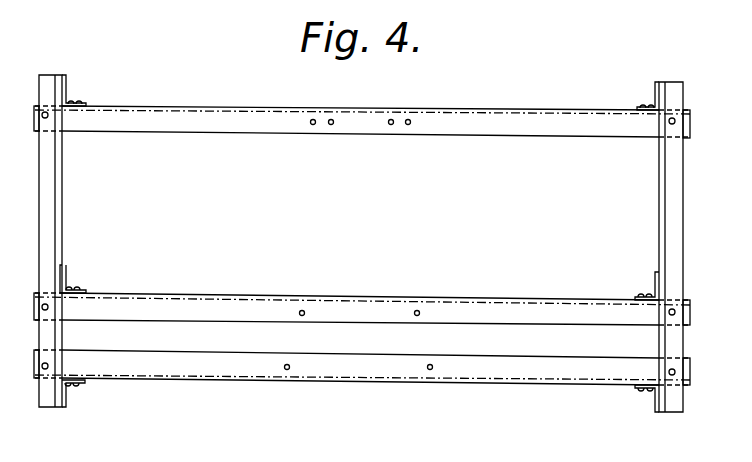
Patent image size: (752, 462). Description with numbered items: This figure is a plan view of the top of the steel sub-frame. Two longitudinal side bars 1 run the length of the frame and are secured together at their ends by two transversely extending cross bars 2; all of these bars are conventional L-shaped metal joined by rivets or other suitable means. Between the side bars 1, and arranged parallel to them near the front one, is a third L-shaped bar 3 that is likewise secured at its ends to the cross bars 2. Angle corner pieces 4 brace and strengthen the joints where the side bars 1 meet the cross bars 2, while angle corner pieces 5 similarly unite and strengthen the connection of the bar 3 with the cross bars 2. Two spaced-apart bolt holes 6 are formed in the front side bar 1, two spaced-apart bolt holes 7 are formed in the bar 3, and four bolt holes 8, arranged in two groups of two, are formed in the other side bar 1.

The longitudinal side bar 1 is at (497, 125).
The cross bar 2 is at (47, 232).
The third L-shaped bar 3 is at (513, 310).
The angle corner piece 4 is at (67, 94).
The angle corner piece 5 is at (63, 281).
The bolt hole 6 is at (288, 370).
The bolt hole 7 is at (301, 310).
The bolt hole 8 is at (313, 125).